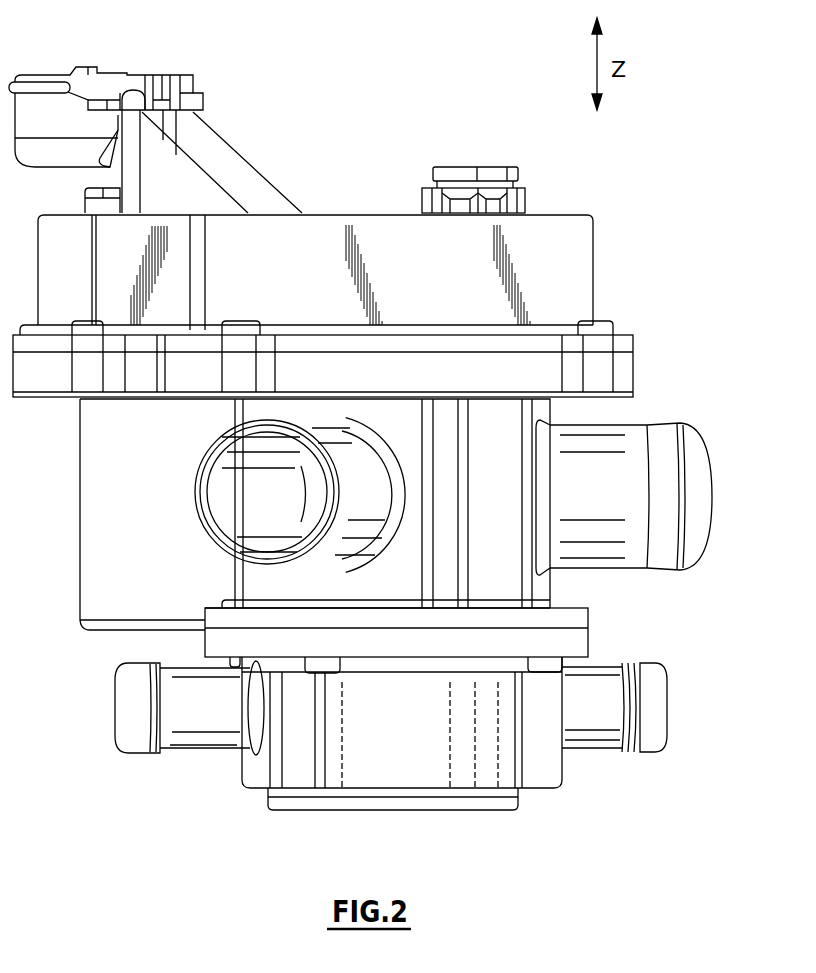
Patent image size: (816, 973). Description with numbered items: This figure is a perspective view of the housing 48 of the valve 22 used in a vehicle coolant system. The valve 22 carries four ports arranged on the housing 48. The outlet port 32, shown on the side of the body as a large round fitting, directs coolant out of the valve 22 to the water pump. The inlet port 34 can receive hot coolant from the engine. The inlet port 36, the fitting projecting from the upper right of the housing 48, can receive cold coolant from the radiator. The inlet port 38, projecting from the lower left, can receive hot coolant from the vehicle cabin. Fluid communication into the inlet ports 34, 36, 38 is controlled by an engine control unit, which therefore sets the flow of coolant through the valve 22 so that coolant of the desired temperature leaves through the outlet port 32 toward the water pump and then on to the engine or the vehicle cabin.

The valve 22 is at (704, 356).
The outlet port 32 is at (210, 496).
The inlet port 34 is at (585, 737).
The inlet port 36 is at (602, 556).
The inlet port 38 is at (214, 738).
The housing 48 is at (580, 267).